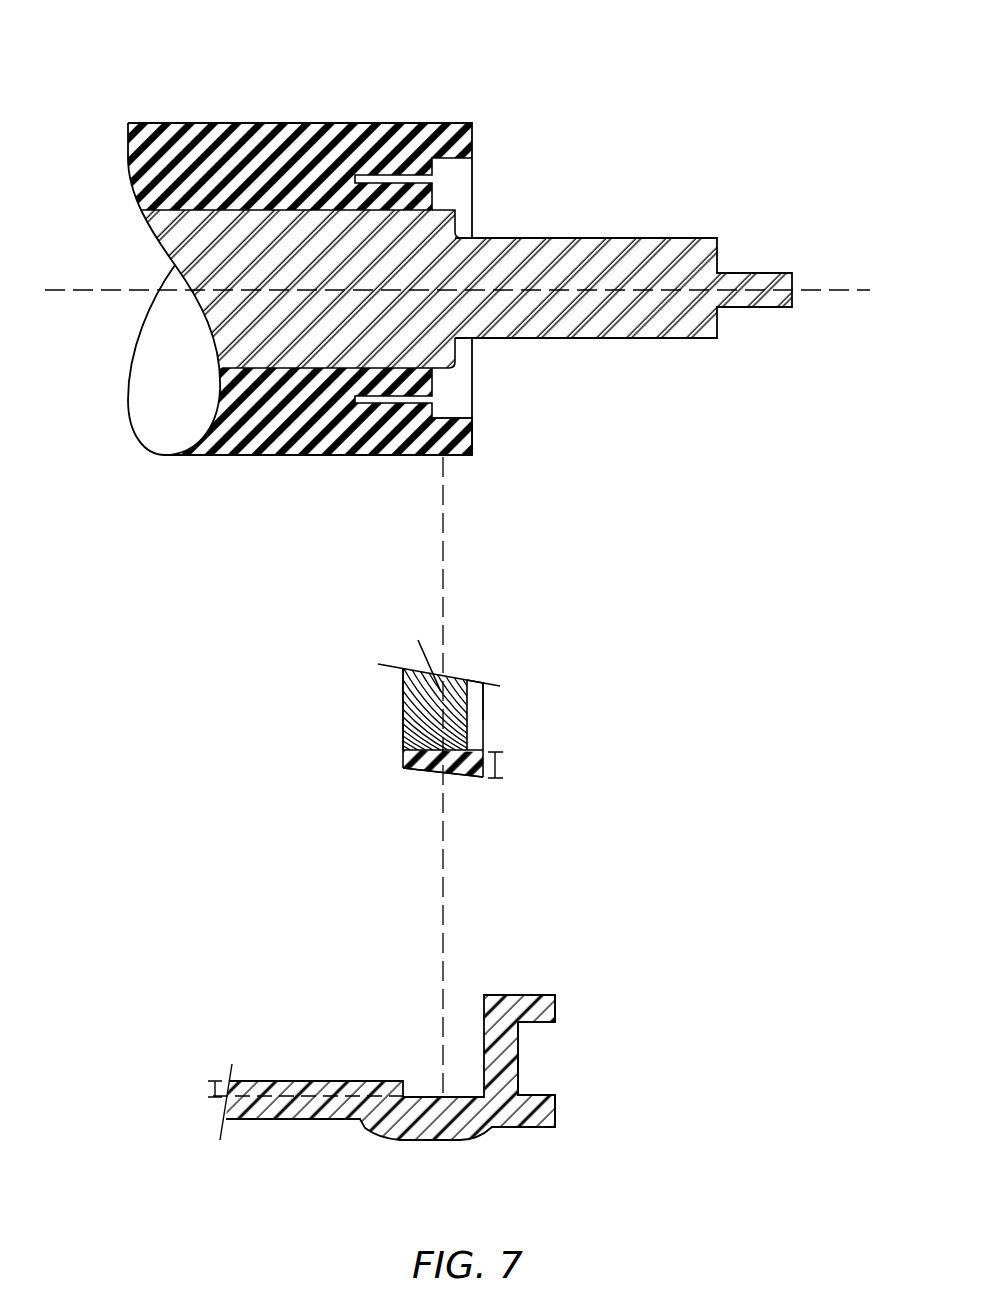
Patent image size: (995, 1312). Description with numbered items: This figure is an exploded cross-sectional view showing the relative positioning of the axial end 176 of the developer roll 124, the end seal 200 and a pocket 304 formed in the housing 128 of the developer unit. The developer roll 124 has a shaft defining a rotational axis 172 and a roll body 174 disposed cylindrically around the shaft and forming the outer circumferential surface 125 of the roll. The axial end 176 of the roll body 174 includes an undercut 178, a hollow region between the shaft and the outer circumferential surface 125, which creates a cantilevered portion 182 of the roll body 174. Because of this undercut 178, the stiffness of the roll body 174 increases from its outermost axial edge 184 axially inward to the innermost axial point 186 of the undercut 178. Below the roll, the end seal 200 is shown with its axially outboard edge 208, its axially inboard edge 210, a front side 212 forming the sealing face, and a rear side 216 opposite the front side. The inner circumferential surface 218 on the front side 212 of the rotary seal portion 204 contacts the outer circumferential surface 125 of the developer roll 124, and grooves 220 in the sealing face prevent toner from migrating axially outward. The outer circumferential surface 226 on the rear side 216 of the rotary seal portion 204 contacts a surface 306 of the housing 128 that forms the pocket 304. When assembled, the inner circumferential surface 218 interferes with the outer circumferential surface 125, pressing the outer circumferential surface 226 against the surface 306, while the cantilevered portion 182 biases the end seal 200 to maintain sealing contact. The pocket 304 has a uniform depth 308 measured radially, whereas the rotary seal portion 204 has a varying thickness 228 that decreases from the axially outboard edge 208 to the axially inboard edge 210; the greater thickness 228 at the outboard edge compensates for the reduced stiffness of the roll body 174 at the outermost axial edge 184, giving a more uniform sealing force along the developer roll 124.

The developer roll 124 is at (534, 64).
The outer circumferential surface 125 is at (297, 456).
The housing 128 is at (548, 995).
The rotational axis 172 is at (815, 290).
The roll body 174 is at (252, 158).
The axial end 176 is at (566, 413).
The undercut 178 is at (476, 188).
The cantilevered portion 182 is at (462, 456).
The outermost axial edge 184 is at (473, 438).
The innermost axial point 186 is at (432, 383).
The end seal 200 is at (491, 632).
The rotary seal portion 204 is at (485, 735).
The axially outboard edge 208 is at (485, 714).
The axially inboard edge 210 is at (405, 727).
The front side 212 is at (417, 710).
The rear side 216 is at (437, 773).
The inner circumferential surface 218 is at (420, 702).
The grooves 220 is at (409, 656).
The outer circumferential surface 226 is at (410, 768).
The thickness 228 is at (501, 768).
The pocket 304 is at (413, 1055).
The surface 306 is at (467, 1096).
The depth 308 is at (214, 1090).